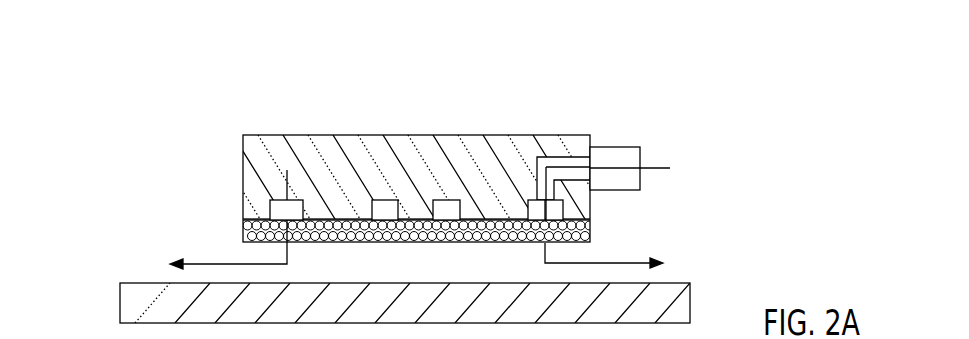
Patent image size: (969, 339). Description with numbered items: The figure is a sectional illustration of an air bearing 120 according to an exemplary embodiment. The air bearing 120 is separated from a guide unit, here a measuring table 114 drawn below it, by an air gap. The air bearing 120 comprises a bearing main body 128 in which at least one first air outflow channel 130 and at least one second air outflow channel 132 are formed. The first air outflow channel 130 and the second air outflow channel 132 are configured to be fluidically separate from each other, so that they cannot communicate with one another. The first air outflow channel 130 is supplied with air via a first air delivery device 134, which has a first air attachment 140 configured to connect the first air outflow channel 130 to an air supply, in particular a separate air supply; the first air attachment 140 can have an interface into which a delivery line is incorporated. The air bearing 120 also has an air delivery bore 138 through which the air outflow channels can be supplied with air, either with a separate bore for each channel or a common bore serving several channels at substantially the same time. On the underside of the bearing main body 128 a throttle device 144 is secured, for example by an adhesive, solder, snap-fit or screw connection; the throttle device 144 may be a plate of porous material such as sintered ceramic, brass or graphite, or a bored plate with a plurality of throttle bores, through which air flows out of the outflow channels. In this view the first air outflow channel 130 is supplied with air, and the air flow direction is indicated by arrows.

The measuring table 114 is at (133, 304).
The air bearing 120 is at (218, 112).
The bearing main body 128 is at (228, 176).
The first air outflow channel 130 is at (378, 200).
The second air outflow channel 132 is at (272, 200).
The first air delivery device 134 is at (624, 125).
The air delivery bore 138 is at (553, 157).
The first air attachment 140 is at (618, 150).
The throttle device 144 is at (243, 231).